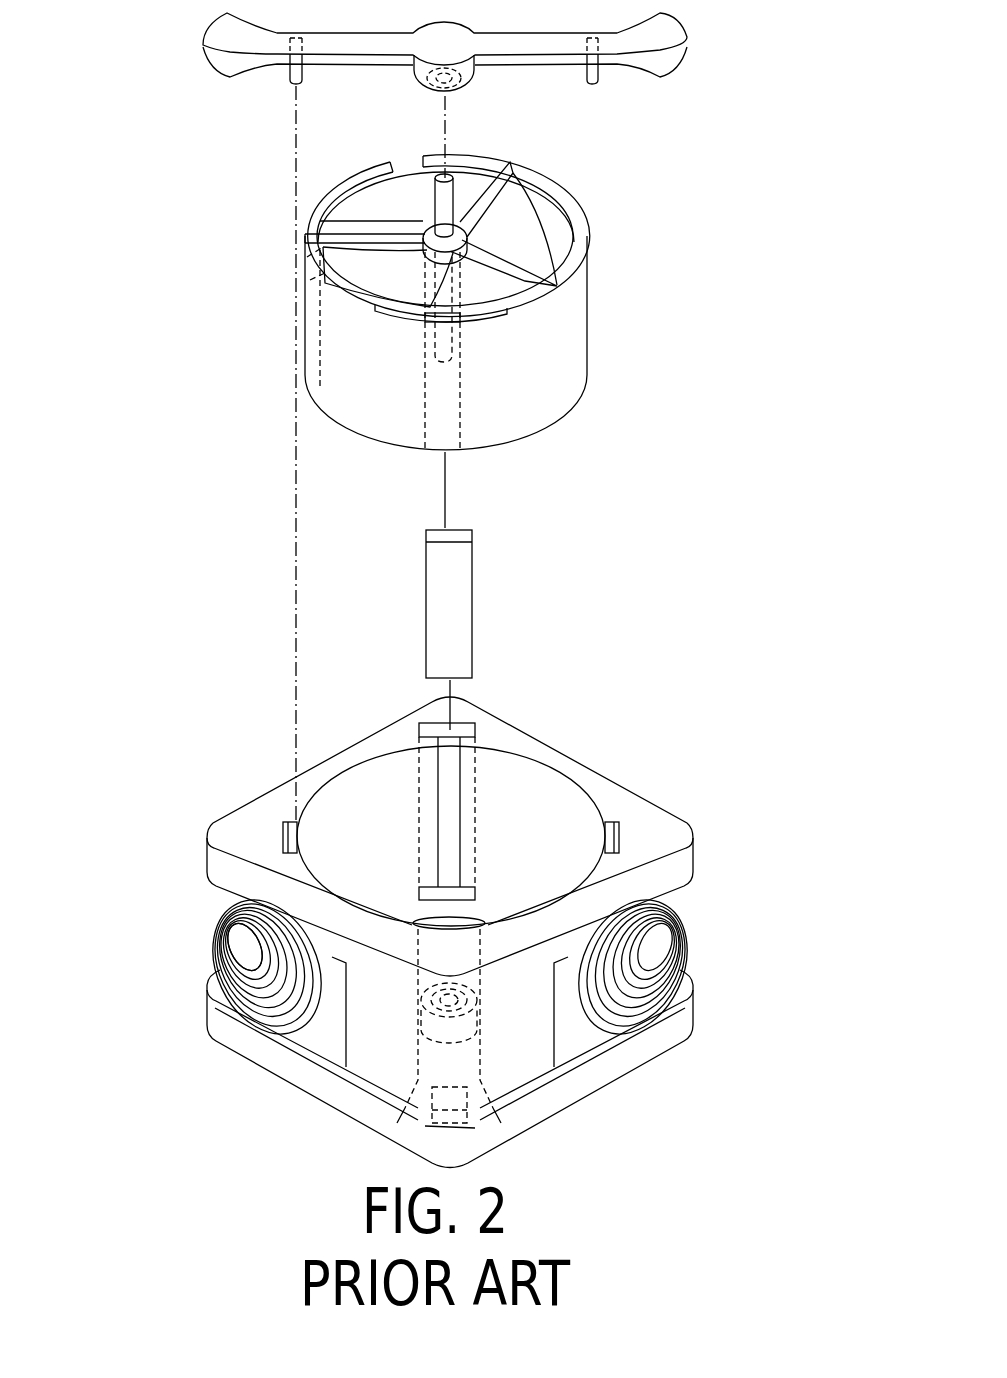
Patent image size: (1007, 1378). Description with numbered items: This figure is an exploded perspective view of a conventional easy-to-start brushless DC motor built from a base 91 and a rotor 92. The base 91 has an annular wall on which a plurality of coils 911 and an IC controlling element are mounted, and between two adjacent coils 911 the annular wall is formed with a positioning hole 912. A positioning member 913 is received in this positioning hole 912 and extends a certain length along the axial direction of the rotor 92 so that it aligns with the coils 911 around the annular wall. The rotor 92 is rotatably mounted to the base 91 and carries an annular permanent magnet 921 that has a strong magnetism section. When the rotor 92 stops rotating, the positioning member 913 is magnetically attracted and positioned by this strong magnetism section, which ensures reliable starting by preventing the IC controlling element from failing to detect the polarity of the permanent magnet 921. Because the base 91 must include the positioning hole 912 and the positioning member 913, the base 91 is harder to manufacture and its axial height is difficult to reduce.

The base 91 is at (435, 903).
The coils 911 is at (228, 942).
The positioning hole 912 is at (467, 728).
The positioning member 913 is at (463, 565).
The rotor 92 is at (445, 231).
The annular permanent magnet 921 is at (572, 265).